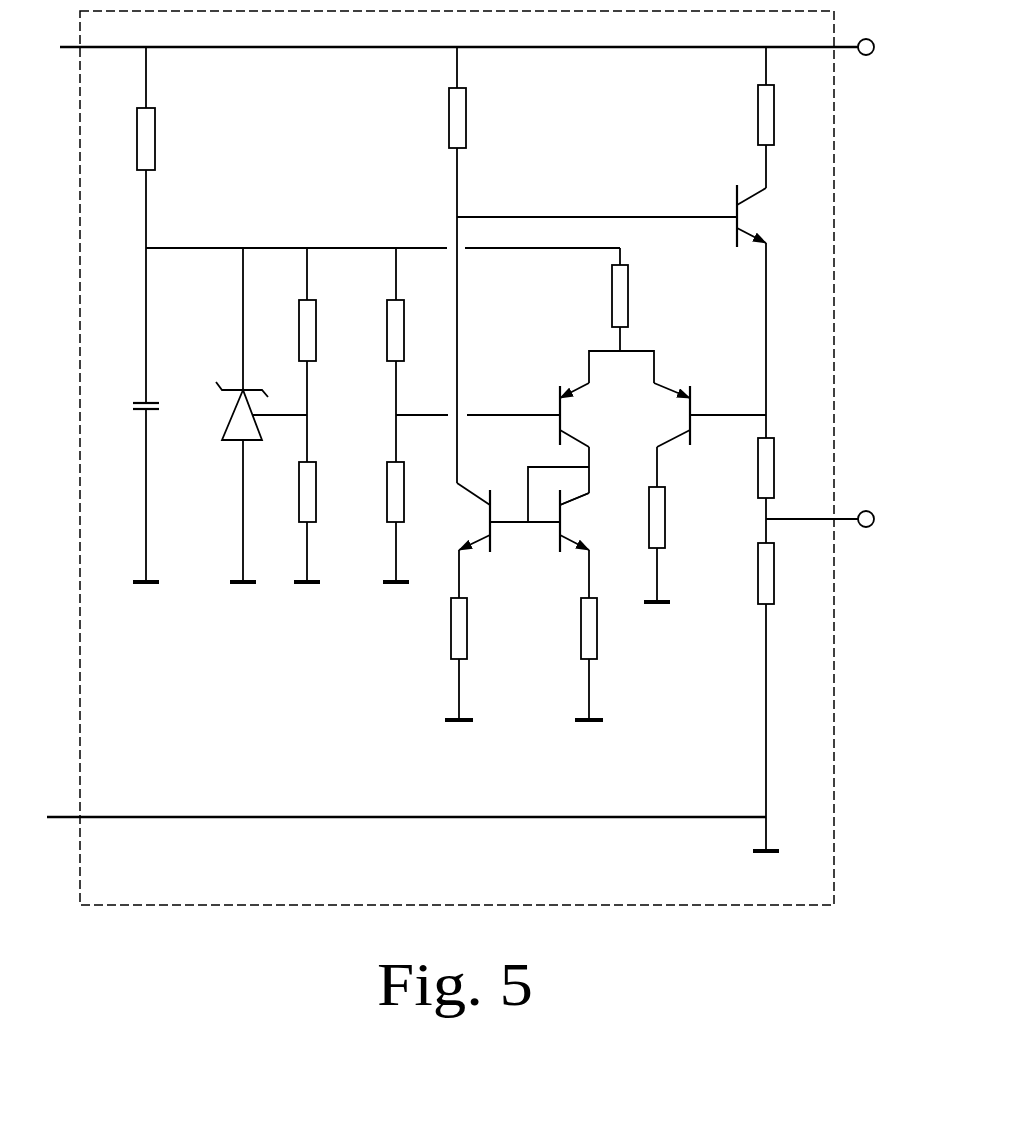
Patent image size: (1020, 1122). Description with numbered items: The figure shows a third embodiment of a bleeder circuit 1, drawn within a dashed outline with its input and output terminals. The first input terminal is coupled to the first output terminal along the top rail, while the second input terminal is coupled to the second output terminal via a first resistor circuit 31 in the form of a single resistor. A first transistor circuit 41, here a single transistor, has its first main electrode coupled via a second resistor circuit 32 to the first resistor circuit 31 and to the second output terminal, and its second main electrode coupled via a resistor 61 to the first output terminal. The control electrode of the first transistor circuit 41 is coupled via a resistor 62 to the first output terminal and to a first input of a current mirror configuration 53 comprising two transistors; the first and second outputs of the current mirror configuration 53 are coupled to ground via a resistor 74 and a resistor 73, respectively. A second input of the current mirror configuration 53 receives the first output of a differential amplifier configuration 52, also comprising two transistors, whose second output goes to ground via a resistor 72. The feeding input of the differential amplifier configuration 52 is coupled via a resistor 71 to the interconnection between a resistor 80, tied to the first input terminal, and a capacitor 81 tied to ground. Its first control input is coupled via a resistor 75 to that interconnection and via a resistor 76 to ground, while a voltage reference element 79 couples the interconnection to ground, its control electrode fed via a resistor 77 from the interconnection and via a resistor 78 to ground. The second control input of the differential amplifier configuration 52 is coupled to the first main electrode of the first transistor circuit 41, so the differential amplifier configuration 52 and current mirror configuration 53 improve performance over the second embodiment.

The bleeder circuit 1 is at (813, 905).
The first resistor circuit 31 is at (781, 697).
The second resistor circuit 32 is at (784, 490).
The first transistor circuit 41 is at (761, 311).
The differential amplifier configuration 52 is at (609, 422).
The current mirror configuration 53 is at (513, 553).
The resistor 61 is at (784, 117).
The resistor 62 is at (453, 276).
The resistor 71 is at (627, 315).
The resistor 72 is at (673, 544).
The resistor 73 is at (603, 659).
The resistor 74 is at (475, 659).
The resistor 75 is at (413, 355).
The resistor 76 is at (411, 522).
The resistor 77 is at (325, 355).
The resistor 78 is at (322, 522).
The voltage reference element 79 is at (248, 415).
The resistor 80 is at (127, 147).
The capacitor 81 is at (129, 415).